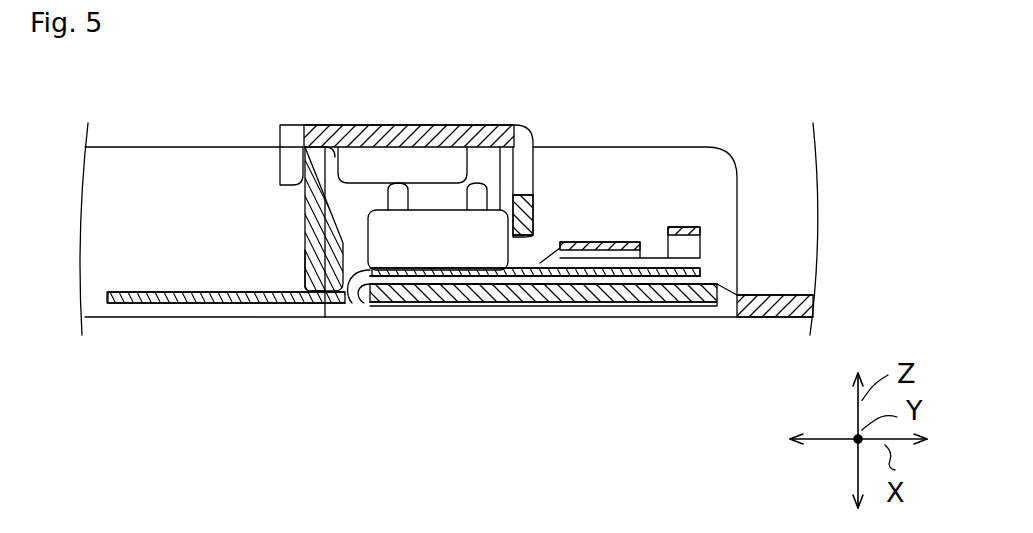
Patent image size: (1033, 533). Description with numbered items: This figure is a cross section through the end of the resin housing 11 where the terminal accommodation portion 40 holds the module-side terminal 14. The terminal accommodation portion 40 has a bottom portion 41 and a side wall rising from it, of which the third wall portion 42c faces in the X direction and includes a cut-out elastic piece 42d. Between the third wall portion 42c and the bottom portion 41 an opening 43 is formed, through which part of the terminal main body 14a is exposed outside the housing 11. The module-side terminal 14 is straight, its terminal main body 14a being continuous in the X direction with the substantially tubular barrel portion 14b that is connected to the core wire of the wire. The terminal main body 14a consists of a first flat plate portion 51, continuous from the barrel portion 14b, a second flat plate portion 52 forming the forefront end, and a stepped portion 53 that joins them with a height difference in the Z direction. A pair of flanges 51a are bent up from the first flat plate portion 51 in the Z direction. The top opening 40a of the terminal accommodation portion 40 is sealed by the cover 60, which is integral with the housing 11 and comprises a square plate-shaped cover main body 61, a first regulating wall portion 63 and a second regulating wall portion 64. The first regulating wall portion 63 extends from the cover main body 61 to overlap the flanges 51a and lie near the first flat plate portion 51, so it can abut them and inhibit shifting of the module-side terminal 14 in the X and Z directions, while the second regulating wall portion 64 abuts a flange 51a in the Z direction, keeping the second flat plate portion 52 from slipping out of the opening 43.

The housing 11 is at (803, 278).
The module-side terminal 14 is at (705, 245).
The terminal main body 14a is at (520, 268).
The barrel portion 14b is at (687, 227).
The terminal accommodation portion 40 is at (412, 293).
The opening 40a is at (325, 143).
The bottom portion 41 is at (430, 293).
The third wall portion 42c is at (318, 206).
The elastic piece 42d is at (325, 270).
The opening 43 is at (377, 262).
The first flat plate portion 51 is at (465, 300).
The flange 51a is at (478, 210).
The second flat plate portion 52 is at (125, 303).
The stepped portion 53 is at (368, 300).
The cover 60 is at (520, 127).
The cover main body 61 is at (442, 123).
The first regulating wall portion 63 is at (540, 207).
The second regulating wall portion 64 is at (398, 162).